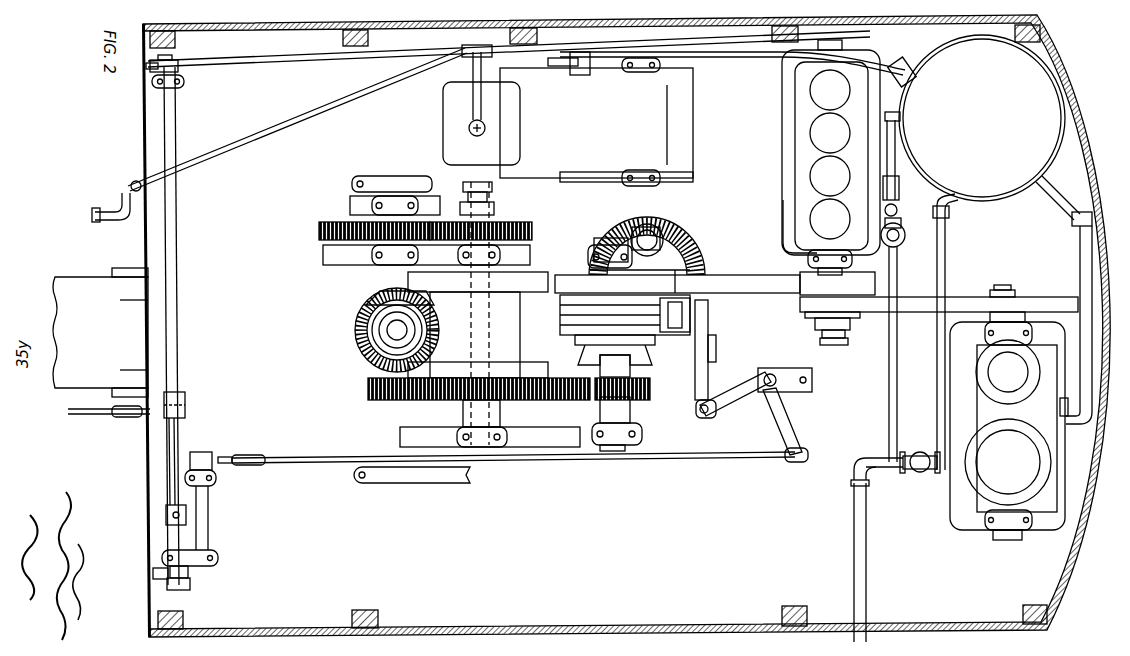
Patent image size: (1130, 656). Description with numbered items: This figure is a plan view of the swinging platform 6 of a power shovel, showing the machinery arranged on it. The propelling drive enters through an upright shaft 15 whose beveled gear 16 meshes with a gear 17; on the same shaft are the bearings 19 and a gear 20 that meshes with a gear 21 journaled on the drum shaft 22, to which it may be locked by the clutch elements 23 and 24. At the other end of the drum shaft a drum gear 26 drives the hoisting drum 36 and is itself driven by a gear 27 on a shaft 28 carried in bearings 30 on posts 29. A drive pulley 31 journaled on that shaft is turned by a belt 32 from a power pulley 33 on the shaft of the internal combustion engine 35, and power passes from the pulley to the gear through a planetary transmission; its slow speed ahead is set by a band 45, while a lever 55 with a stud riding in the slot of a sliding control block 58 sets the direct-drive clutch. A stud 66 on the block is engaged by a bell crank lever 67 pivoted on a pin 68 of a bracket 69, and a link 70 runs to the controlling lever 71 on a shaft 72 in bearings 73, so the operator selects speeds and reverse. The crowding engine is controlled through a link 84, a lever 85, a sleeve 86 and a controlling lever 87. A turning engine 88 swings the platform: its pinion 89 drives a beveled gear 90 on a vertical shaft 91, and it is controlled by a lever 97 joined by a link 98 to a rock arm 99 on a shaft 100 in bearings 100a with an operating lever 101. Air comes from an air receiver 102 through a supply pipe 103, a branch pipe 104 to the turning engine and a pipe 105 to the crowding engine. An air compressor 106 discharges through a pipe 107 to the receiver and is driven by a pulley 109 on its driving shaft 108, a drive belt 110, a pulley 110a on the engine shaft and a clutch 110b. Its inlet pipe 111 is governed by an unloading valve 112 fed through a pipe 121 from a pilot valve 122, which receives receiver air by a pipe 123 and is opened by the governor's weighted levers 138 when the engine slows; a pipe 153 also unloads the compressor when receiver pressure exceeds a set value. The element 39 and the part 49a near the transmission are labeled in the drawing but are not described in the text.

The swinging platform 6 is at (680, 628).
The upright shaft 15 is at (365, 351).
The beveled gear 16 is at (372, 331).
The gear 17 is at (372, 300).
The bearings 19 is at (378, 205).
The gear 20 is at (318, 232).
The gear 21 is at (533, 232).
The drum shaft 22 is at (492, 190).
The clutch element 23 is at (495, 216).
The clutch element 24 is at (497, 198).
The drum gear 26 is at (366, 388).
The gear 27 is at (610, 400).
The shaft 28 is at (614, 451).
The posts 29 is at (643, 436).
The bearings 30 is at (610, 248).
The drive pulley 31 is at (700, 272).
The belt 32 is at (706, 279).
The power pulley 33 is at (878, 282).
The internal combustion engine 35 is at (812, 160).
The hoisting drum 36 is at (478, 313).
The box 39 is at (100, 332).
The band 45 is at (575, 339).
The cylinder 49a is at (560, 306).
The lever 55 is at (716, 348).
The sliding control block 58 is at (708, 373).
The stud 66 is at (697, 406).
The bell crank lever 67 is at (748, 396).
The pin 68 is at (766, 375).
The bracket 69 is at (790, 396).
The link 70 is at (736, 459).
The controlling lever 71 is at (205, 462).
The shaft 72 is at (209, 512).
The bearings 73 is at (216, 481).
The link 84 is at (88, 408).
The lever 85 is at (186, 405).
The sleeve 86 is at (179, 433).
The controlling lever 87 is at (187, 519).
The turning engine 88 is at (568, 122).
The pinion 89 is at (660, 185).
The beveled gear 90 is at (680, 202).
The vertical shaft 91 is at (662, 237).
The controlling lever 97 is at (570, 76).
The link 98 is at (316, 59).
The rock arm 99 is at (180, 62).
The shaft 100 is at (176, 120).
The bearings 100a is at (186, 87).
The operating lever 101 is at (171, 579).
The air receiver 102 is at (982, 118).
The supply pipe 103 is at (762, 56).
The branch pipe 104 is at (470, 94).
The pipe 105 is at (272, 134).
The air compressor 106 is at (1007, 426).
The discharge pipe 107 is at (1058, 200).
The driving shaft 108 is at (1000, 290).
The pulley 109 is at (1010, 293).
The drive belt 110 is at (975, 300).
The pulley 110a is at (806, 315).
The clutch 110b is at (846, 343).
The inlet pipe 111 is at (852, 519).
The unloading valve 112 is at (912, 471).
The pipe 121 is at (887, 438).
The pilot valve 122 is at (899, 190).
The pipe 123 is at (897, 155).
The weighted levers 138 is at (906, 240).
The pipe 153 is at (937, 412).